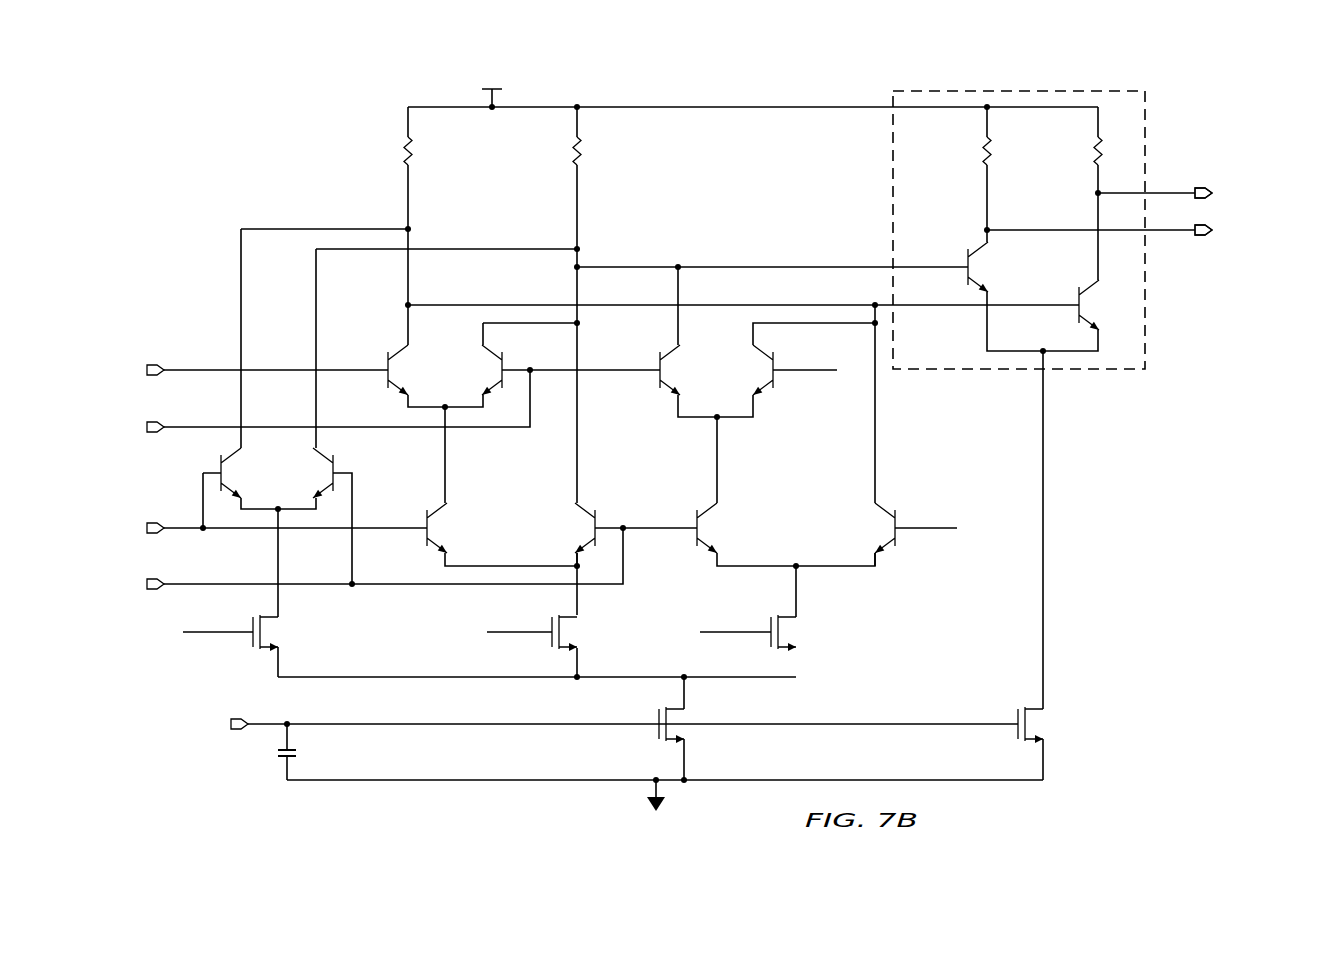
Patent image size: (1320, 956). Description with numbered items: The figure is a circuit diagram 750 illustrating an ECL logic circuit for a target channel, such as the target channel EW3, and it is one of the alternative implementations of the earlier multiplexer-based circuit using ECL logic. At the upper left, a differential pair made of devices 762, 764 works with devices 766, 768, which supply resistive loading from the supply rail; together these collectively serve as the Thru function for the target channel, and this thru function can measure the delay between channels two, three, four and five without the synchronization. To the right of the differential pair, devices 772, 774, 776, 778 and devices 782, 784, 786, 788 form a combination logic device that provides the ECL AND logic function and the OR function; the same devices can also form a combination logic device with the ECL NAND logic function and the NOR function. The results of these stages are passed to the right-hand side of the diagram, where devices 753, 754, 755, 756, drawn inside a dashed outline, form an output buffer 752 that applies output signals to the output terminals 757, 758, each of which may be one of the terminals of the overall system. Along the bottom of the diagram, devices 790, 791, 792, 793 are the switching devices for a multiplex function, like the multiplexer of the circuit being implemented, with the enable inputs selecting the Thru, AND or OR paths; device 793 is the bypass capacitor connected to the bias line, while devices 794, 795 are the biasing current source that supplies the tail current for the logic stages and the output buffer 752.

The circuit diagram 750 is at (204, 136).
The output buffer 752 is at (1156, 120).
The output buffer device 753 is at (966, 260).
The output buffer device 754 is at (1077, 316).
The output buffer device 755 is at (982, 150).
The output buffer device 756 is at (1093, 150).
The output terminal 757 is at (1168, 190).
The output terminal 758 is at (1168, 233).
The differential pair device 762 is at (219, 468).
The differential pair device 764 is at (336, 469).
The resistive loading device 766 is at (403, 150).
The resistive loading device 768 is at (572, 150).
The combination logic device 772 is at (386, 365).
The combination logic device 774 is at (505, 366).
The combination logic device 776 is at (425, 540).
The combination logic device 778 is at (598, 521).
The combination logic device 782 is at (657, 365).
The combination logic device 784 is at (777, 366).
The combination logic device 786 is at (695, 540).
The combination logic device 788 is at (898, 521).
The switching device 790 is at (252, 645).
The switching device 791 is at (550, 645).
The switching device 792 is at (769, 645).
The bypass capacitor 793 is at (276, 756).
The biasing current source device 794 is at (657, 738).
The biasing current source device 795 is at (1015, 738).